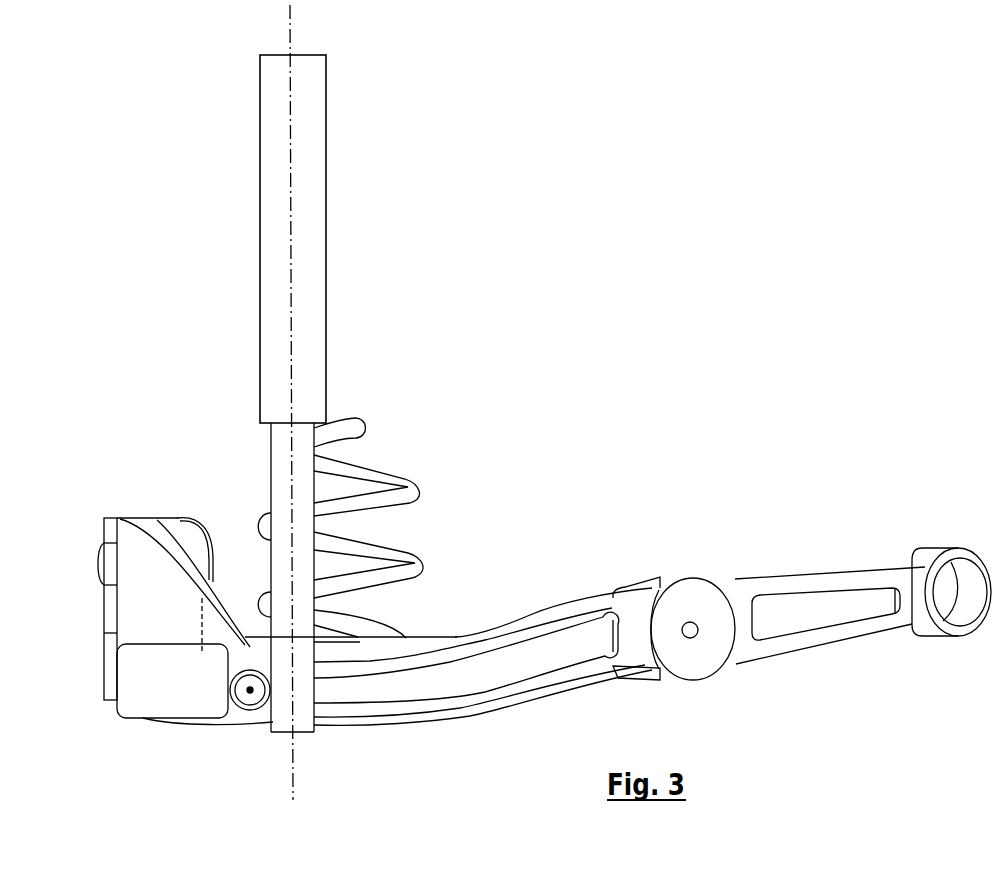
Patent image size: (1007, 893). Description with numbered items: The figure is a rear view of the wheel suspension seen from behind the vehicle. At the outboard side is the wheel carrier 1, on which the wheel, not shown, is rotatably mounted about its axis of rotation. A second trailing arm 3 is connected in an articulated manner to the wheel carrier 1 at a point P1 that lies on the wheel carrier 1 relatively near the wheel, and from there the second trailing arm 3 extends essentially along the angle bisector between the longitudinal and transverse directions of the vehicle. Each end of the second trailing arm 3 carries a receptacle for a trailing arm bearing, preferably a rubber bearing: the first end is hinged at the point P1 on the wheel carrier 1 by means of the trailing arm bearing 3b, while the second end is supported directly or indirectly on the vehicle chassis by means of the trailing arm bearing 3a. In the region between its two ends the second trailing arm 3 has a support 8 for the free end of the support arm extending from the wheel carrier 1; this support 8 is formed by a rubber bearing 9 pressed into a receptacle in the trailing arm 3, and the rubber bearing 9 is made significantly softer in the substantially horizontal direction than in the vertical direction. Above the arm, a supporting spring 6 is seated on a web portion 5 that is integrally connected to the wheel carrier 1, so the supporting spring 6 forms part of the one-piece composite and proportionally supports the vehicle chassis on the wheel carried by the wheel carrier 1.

The wheel carrier 1 is at (147, 680).
The second trailing arm 3 is at (652, 610).
The trailing arm bearing 3a is at (928, 562).
The trailing arm bearing 3b is at (258, 710).
The web portion 5 is at (277, 443).
The supporting spring 6 is at (412, 494).
The support 8 is at (710, 655).
The rubber bearing 9 is at (708, 652).
The point P1 is at (249, 693).